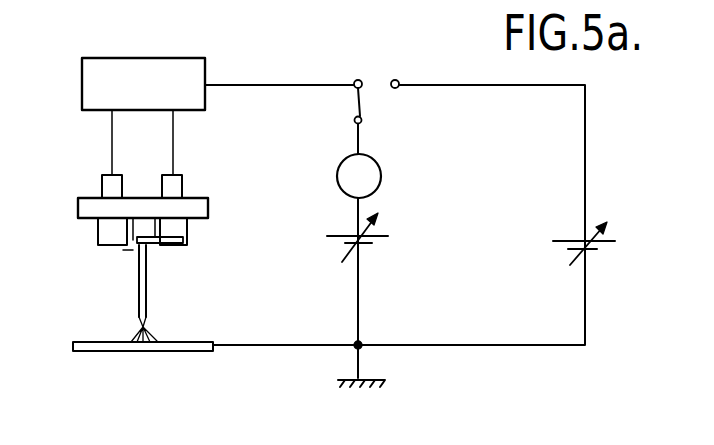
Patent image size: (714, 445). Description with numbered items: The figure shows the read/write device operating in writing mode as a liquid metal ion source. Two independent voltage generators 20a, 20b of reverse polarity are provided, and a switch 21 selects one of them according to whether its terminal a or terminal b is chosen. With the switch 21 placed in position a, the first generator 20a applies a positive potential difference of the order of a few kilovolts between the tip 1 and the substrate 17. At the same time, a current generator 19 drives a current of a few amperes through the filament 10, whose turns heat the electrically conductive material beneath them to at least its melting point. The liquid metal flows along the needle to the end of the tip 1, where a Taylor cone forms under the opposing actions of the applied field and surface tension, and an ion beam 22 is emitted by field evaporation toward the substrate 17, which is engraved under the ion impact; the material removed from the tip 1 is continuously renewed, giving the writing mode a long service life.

The current generator 19 is at (103, 77).
The filament 10 is at (115, 253).
The tip 1 is at (133, 295).
The spray 22 is at (136, 335).
The substrate 17 is at (90, 352).
The switch 21 is at (368, 78).
The first voltage generator 20a is at (345, 238).
The second voltage generator 20b is at (598, 250).